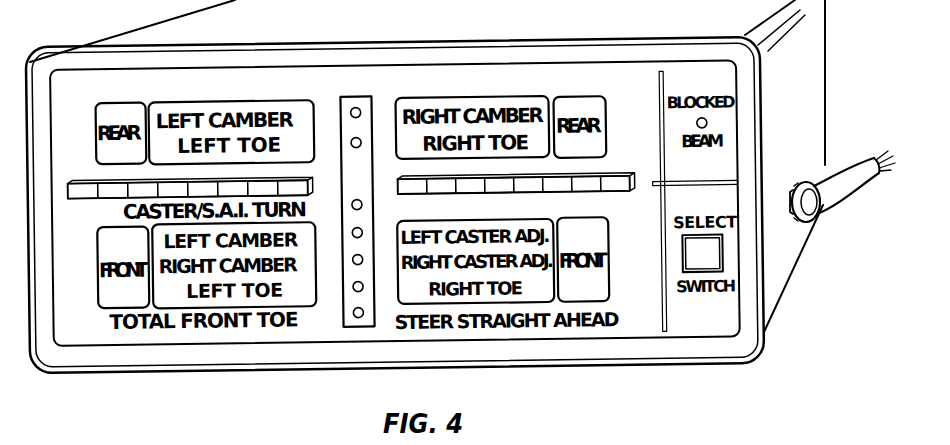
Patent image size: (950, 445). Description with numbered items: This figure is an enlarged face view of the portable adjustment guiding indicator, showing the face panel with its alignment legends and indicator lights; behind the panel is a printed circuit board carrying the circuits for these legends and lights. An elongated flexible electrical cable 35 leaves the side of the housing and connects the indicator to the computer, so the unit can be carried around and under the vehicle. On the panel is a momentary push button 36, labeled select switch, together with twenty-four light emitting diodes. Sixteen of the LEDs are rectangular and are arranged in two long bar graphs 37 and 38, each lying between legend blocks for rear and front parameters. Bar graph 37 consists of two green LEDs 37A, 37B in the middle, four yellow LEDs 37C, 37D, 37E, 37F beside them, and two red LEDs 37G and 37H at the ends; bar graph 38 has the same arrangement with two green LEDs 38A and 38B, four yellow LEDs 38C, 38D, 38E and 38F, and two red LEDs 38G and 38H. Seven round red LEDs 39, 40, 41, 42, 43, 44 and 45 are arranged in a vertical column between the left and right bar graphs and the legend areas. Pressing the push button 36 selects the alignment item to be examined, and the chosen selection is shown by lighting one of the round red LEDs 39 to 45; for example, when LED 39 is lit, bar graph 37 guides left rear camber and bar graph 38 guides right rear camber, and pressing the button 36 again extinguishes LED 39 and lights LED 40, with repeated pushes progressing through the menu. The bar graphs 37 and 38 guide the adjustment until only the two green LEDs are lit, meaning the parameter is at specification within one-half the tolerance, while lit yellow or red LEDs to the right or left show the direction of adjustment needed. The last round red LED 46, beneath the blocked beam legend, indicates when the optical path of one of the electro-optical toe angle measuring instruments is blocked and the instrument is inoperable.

The flexible electrical cable 35 is at (838, 190).
The momentary push button 36 is at (710, 256).
The bar graph 37 is at (200, 191).
The green LED 37A is at (187, 177).
The green LED 37B is at (205, 186).
The yellow LED 37C is at (151, 177).
The yellow LED 37D is at (116, 186).
The yellow LED 37E is at (235, 186).
The yellow LED 37F is at (265, 186).
The red LED 37G is at (72, 178).
The red LED 37H is at (302, 186).
The bar graph 38 is at (520, 203).
The green LED 38A is at (500, 195).
The green LED 38B is at (529, 195).
The yellow LED 38C is at (490, 203).
The yellow LED 38D is at (451, 203).
The yellow LED 38E is at (558, 195).
The yellow LED 38F is at (589, 177).
The red LED 38G is at (414, 196).
The red LED 38H is at (628, 194).
The round red LED 39 is at (356, 107).
The round red LED 40 is at (354, 146).
The round red LED 41 is at (366, 189).
The round red LED 42 is at (352, 230).
The round red LED 43 is at (352, 257).
The round red LED 44 is at (352, 284).
The round red LED 45 is at (352, 310).
The round red LED 46 is at (706, 127).